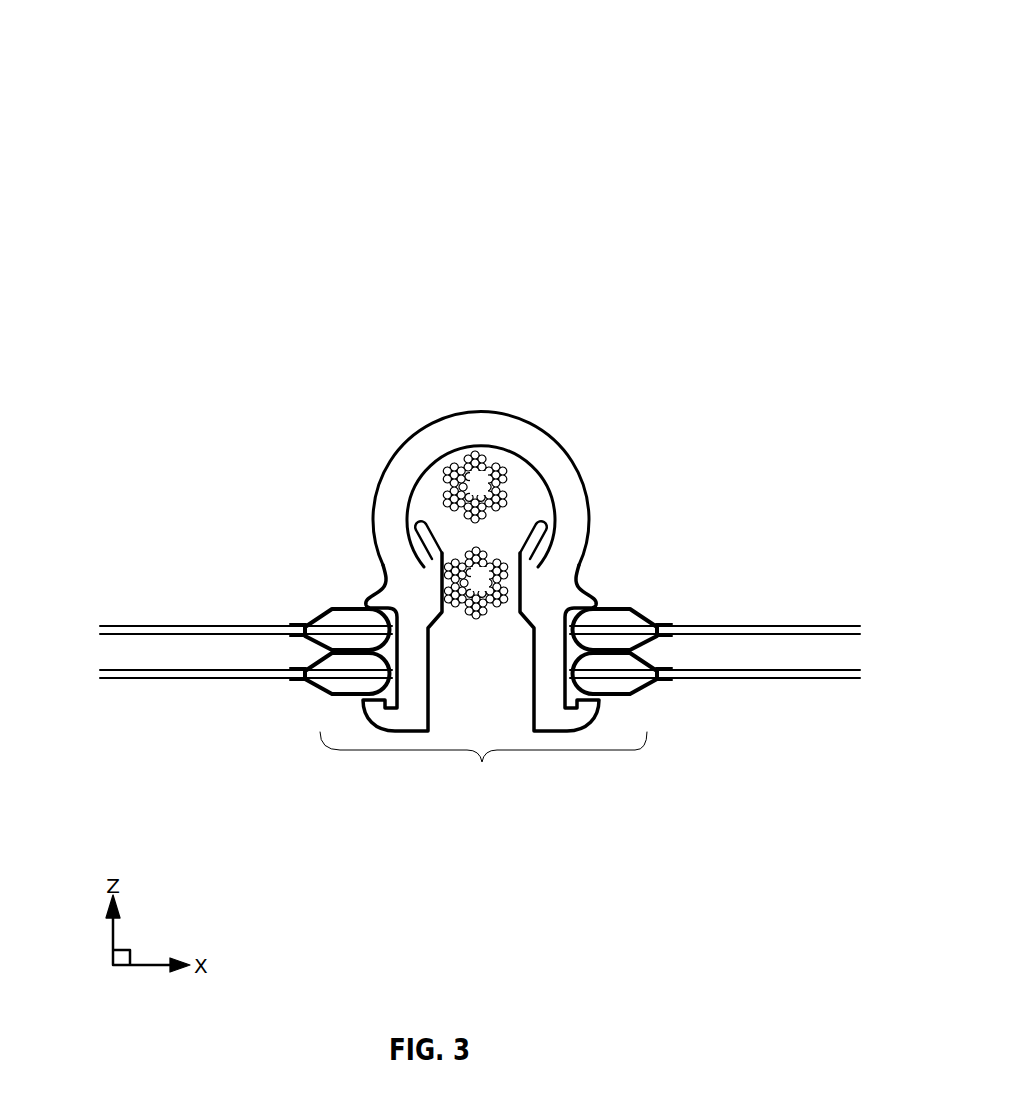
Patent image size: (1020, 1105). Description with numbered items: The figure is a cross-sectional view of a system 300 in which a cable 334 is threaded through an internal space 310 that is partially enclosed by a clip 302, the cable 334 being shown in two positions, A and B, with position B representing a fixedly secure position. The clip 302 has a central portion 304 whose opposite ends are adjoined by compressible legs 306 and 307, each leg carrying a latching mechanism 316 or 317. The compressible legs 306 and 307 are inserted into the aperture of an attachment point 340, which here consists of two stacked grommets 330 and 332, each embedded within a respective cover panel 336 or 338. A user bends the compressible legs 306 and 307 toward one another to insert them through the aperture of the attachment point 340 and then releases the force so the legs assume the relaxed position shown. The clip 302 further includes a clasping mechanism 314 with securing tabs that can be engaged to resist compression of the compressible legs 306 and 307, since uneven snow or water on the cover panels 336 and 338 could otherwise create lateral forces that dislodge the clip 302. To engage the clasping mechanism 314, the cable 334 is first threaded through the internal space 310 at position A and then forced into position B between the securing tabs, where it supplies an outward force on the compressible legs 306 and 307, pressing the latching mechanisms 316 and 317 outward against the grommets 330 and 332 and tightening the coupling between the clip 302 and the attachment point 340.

The system 300 is at (147, 73).
The clip 302 is at (272, 392).
The central portion 304 is at (428, 440).
The compressible leg 306 is at (413, 700).
The compressible leg 307 is at (547, 702).
The internal space 310 is at (537, 497).
The clasping mechanism 314 is at (498, 532).
The latching mechanism 316 is at (695, 588).
The latching mechanism 317 is at (318, 586).
The grommet 330 is at (330, 637).
The grommet 332 is at (355, 682).
The cable 334 is at (513, 470).
The cover panel 336 is at (748, 634).
The cover panel 338 is at (815, 678).
The attachment point 340 is at (482, 765).